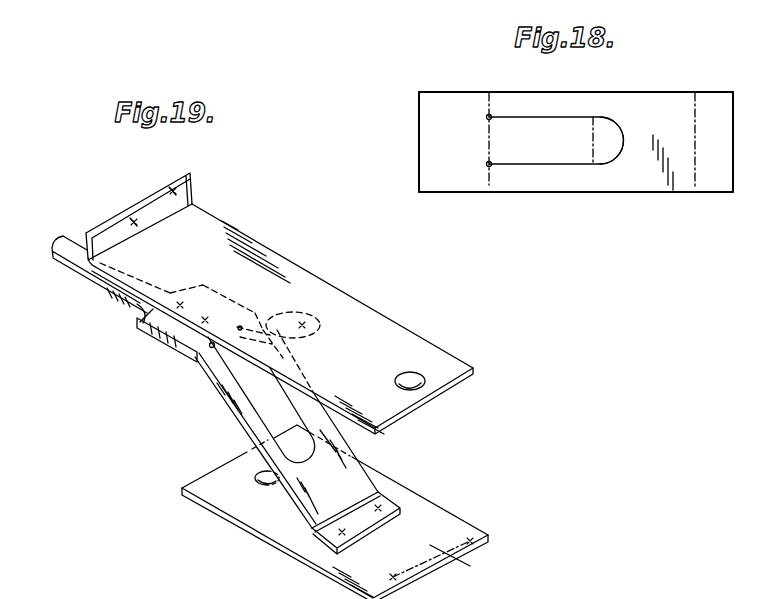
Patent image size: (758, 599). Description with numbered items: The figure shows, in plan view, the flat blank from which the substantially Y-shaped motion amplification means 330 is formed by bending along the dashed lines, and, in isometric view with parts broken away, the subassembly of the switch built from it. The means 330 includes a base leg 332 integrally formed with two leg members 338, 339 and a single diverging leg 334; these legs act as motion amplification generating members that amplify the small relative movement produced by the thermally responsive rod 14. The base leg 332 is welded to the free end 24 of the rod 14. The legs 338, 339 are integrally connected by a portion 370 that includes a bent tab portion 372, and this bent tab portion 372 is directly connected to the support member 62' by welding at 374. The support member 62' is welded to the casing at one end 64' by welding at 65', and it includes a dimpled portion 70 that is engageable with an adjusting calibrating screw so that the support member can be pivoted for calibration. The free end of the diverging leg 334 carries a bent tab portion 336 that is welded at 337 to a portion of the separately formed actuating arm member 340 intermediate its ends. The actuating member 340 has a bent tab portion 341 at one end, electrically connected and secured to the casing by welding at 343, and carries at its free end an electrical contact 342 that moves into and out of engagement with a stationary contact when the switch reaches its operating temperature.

In FIG. 19, the rod 14 is at (63, 255).
In FIG. 19, the free end of rod 24 is at (137, 306).
In FIG. 19, the support member 62' is at (335, 512).
In FIG. 19, the end of support member 64' is at (470, 566).
In FIG. 19, the welding 65' is at (431, 559).
In FIG. 19, the dimpled portion 70 is at (263, 478).
In FIG. 19, the motion amplification means 330 is at (294, 231).
In FIG. 18, the motion amplification means 330 is at (676, 81).
In FIG. 19, the base leg 332 is at (166, 338).
In FIG. 18, the base leg 332 is at (425, 118).
In FIG. 19, the diverging leg 334 is at (270, 323).
In FIG. 18, the diverging leg 334 is at (512, 128).
In FIG. 19, the bent tab portion 336 is at (318, 332).
In FIG. 18, the bent tab portion 336 is at (613, 134).
In FIG. 19, the welding 337 is at (303, 324).
In FIG. 19, the leg member 338 is at (247, 423).
In FIG. 18, the leg member 338 is at (557, 183).
In FIG. 19, the leg member 339 is at (330, 435).
In FIG. 18, the leg member 339 is at (555, 100).
In FIG. 19, the actuating arm member 340 is at (350, 300).
In FIG. 19, the bent tab portion 341 is at (190, 185).
In FIG. 19, the electrical contact 342 is at (397, 381).
In FIG. 19, the welding 343 is at (140, 224).
In FIG. 19, the portion 370 is at (344, 463).
In FIG. 19, the bent tab portion 372 is at (398, 503).
In FIG. 18, the bent tab portion 372 is at (710, 183).
In FIG. 19, the welding 374 is at (380, 512).